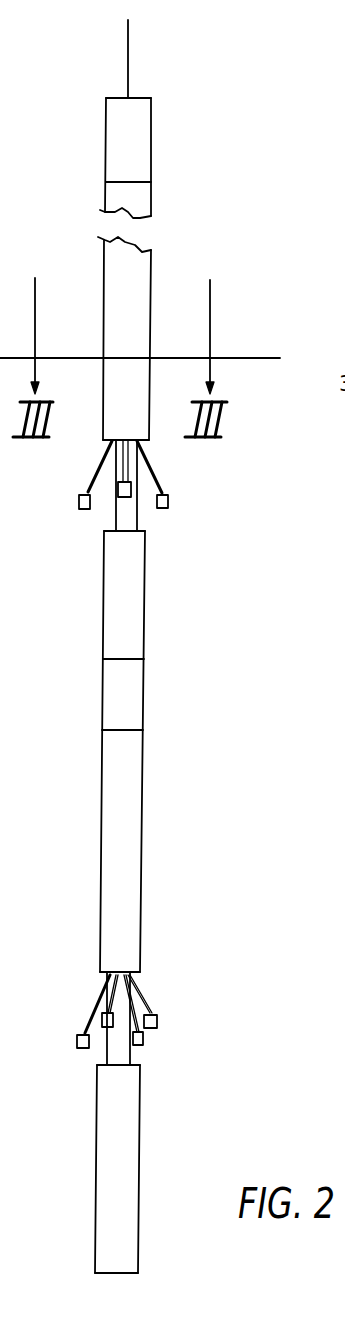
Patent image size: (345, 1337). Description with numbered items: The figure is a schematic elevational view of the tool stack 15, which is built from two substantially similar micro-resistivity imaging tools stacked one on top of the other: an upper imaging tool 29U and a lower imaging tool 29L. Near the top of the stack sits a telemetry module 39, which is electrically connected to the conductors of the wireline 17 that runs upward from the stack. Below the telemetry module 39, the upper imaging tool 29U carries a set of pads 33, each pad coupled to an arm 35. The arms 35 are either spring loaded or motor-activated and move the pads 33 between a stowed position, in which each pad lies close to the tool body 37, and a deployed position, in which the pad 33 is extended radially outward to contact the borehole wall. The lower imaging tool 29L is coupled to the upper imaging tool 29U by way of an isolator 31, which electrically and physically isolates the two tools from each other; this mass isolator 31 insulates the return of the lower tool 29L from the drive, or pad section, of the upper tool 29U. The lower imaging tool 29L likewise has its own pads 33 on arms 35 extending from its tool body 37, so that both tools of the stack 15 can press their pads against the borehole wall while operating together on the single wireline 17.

The wireline 17 is at (126, 60).
The telemetry module 39 is at (143, 143).
The upper imaging tool 29U is at (163, 524).
The lower imaging tool 29L is at (167, 948).
The pads 33 is at (80, 505).
The arm 35 is at (147, 457).
The tool body 37 is at (127, 515).
The tool stack 15 is at (112, 645).
The isolator 31 is at (132, 695).